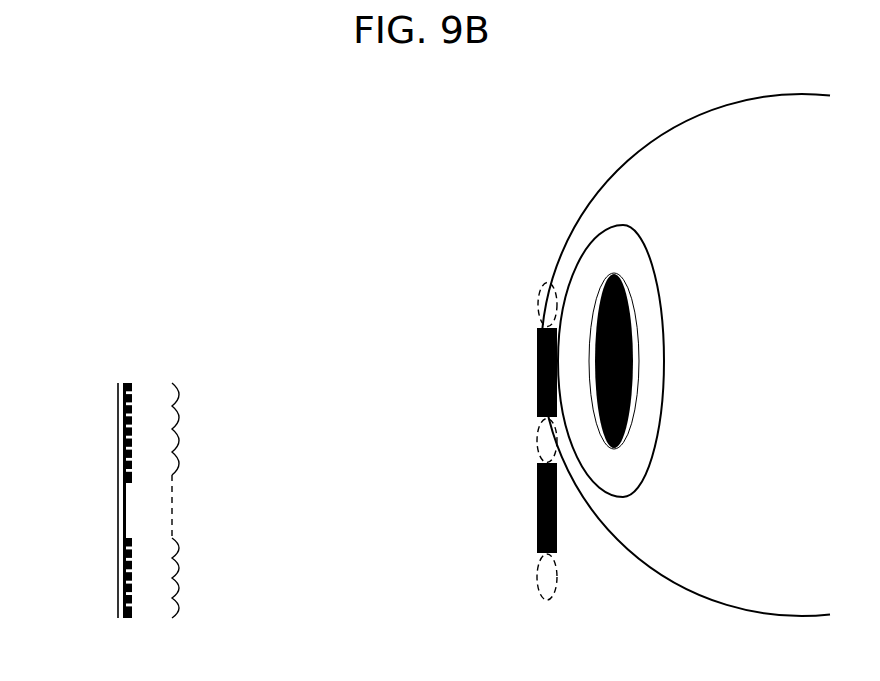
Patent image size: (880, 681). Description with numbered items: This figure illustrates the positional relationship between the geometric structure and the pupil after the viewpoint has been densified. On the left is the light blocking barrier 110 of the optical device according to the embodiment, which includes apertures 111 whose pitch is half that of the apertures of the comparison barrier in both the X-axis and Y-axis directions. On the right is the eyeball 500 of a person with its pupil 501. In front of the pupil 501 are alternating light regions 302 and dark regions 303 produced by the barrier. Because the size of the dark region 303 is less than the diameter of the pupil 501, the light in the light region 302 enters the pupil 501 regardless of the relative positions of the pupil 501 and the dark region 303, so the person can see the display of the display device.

The light blocking barrier 110 is at (126, 398).
The apertures 111 is at (126, 457).
The light region 302 is at (537, 310).
The dark region 303 is at (537, 365).
The eyeball 500 is at (783, 102).
The pupil 501 is at (628, 294).